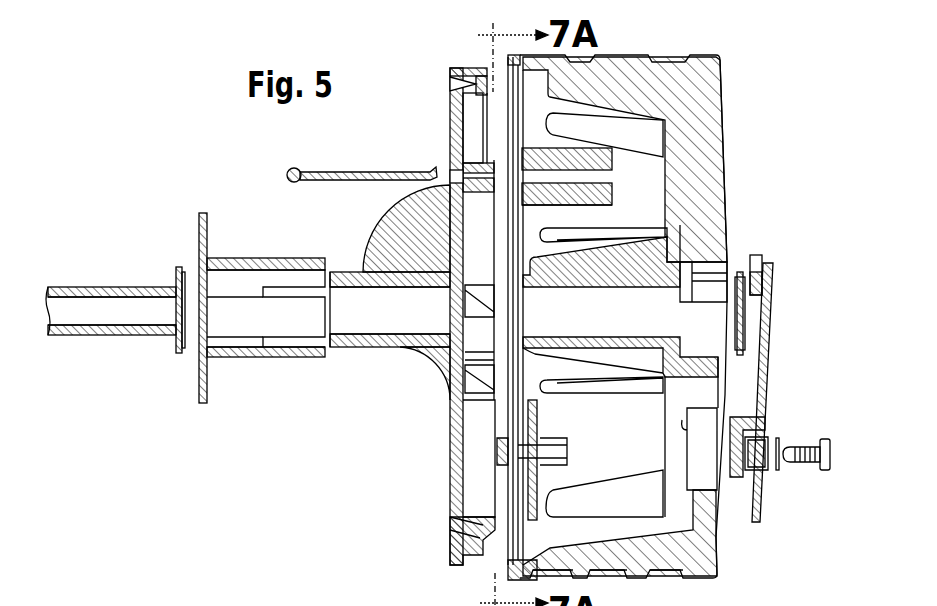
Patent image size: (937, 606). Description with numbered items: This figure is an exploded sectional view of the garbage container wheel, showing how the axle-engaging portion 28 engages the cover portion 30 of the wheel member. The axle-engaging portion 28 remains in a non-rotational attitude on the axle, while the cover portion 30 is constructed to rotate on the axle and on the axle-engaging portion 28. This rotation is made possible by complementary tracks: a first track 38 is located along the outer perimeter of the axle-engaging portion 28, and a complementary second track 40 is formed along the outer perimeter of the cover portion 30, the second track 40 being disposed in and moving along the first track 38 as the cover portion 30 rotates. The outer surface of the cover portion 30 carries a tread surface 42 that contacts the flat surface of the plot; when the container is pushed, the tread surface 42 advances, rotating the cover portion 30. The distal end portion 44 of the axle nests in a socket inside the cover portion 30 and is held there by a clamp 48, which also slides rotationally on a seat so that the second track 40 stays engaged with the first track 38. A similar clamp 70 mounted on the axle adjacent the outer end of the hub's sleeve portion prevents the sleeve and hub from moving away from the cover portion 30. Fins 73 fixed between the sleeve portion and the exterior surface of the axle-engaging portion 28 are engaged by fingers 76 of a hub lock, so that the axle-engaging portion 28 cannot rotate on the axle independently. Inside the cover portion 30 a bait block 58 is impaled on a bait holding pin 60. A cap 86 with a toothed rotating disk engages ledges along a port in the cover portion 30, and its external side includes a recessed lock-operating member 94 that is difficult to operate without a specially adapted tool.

The axle-engaging portion 28 is at (450, 465).
The cover portion 30 is at (717, 570).
The first track 38 is at (468, 68).
The second track 40 is at (508, 560).
The tread surface 42 is at (633, 578).
The distal end portion 44 is at (193, 326).
The clamp 48 is at (740, 322).
The bait block 58 is at (586, 145).
The bait holding pin 60 is at (316, 168).
The clamp 70 is at (177, 270).
The fins 73 is at (428, 253).
The fingers 76 is at (302, 310).
The cap 86 is at (772, 388).
The lock-operating member 94 is at (800, 462).